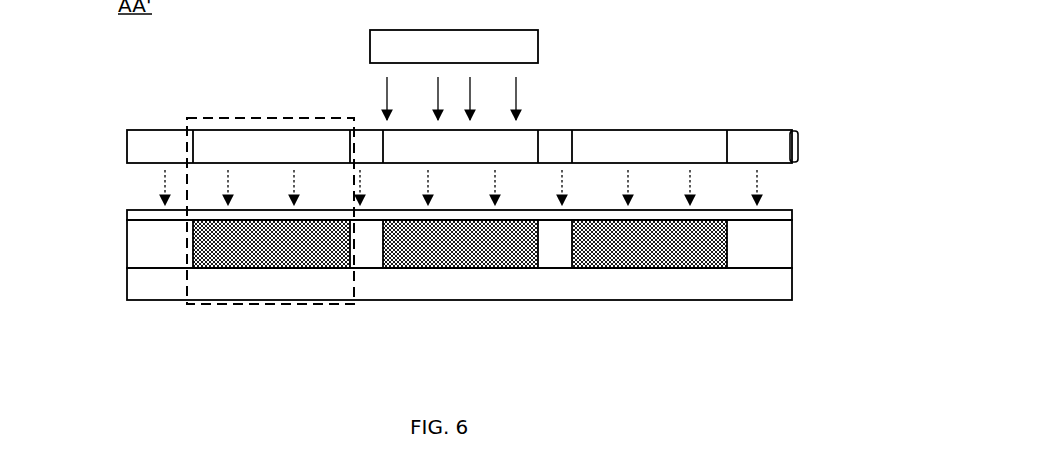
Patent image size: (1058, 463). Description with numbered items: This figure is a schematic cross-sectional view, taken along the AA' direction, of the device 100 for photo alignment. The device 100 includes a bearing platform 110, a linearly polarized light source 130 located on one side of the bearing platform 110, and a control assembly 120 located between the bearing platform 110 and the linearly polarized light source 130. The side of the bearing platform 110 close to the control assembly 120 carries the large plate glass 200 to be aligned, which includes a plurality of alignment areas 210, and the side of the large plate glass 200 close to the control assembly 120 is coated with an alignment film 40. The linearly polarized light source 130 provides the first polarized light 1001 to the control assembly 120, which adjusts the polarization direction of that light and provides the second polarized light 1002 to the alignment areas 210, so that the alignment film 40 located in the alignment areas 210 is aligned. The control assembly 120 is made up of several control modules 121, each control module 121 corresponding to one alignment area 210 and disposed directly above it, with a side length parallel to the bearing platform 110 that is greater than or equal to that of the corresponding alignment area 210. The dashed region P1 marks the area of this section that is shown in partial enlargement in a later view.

The device for photo alignment 100 is at (878, 35).
The bearing platform 110 is at (750, 285).
The control assembly 120 is at (798, 146).
The control module 121 is at (288, 145).
The linearly polarized light source 130 is at (530, 45).
The incident light 1001 is at (516, 97).
The transmitted light 1002 is at (757, 182).
The alignment film 40 is at (762, 215).
The large plate glass to be aligned 200 is at (406, 287).
The alignment area 210 is at (463, 255).
The area P1 is at (260, 305).